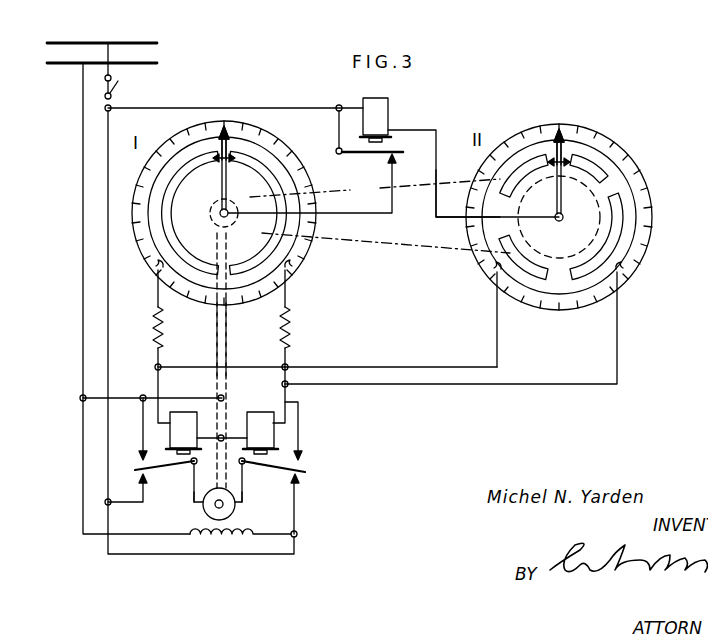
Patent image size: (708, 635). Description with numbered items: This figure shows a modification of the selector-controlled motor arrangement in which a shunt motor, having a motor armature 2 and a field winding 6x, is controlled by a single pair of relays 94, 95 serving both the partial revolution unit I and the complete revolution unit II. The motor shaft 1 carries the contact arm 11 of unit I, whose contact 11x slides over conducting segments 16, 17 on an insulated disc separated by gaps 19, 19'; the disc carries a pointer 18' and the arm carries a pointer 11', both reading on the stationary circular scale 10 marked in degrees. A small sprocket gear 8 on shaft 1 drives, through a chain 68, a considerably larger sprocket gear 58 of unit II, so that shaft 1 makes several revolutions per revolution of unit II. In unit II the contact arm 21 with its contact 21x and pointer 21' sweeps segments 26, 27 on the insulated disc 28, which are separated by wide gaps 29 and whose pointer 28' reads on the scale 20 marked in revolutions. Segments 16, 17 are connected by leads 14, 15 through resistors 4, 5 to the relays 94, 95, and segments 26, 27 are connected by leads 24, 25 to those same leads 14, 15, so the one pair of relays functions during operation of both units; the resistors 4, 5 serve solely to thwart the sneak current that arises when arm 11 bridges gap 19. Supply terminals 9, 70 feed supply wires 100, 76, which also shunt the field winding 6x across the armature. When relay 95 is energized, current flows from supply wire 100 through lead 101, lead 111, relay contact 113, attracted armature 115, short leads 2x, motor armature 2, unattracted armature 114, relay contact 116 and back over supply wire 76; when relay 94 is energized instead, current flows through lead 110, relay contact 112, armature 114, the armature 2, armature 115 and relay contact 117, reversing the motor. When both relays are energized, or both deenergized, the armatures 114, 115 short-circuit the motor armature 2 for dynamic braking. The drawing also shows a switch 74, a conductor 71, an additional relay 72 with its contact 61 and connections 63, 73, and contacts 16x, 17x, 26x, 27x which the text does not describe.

The supply terminal 9 is at (80, 63).
The supply terminal 70 is at (116, 38).
The switch 74 is at (118, 85).
The conductor 71 is at (192, 111).
The supply wire 76 is at (108, 282).
The supply wire 100 is at (83, 284).
The relay contact 61 is at (339, 130).
The relay 72 is at (388, 121).
The conductor 63 is at (353, 214).
The chain 68 is at (400, 242).
The conductor 73 is at (436, 212).
The stationary circular scale 10 is at (268, 136).
The conducting segment 16 is at (167, 218).
The conducting segment 17 is at (273, 239).
The gap 19 is at (189, 128).
The sprocket gear 8 is at (210, 225).
The contact arm 11 is at (239, 168).
The pointer 18' is at (238, 114).
The pointer 11' is at (257, 124).
The contact 11x is at (221, 162).
The gap 19' is at (237, 360).
The motor shaft 1 is at (229, 341).
The contact 16x is at (160, 271).
The contact 17x is at (285, 270).
The lead 14 is at (158, 296).
The resistor 4 is at (154, 320).
The lead 15 is at (287, 298).
The resistor 5 is at (289, 322).
The stationary circular scale 20 is at (620, 148).
The insulated disc 28 is at (580, 217).
The sprocket gear 58 is at (603, 188).
The conducting segment 26 is at (513, 249).
The conducting segment 27 is at (601, 247).
The gap 29 is at (553, 150).
The contact arm 21 is at (574, 177).
The pointer 28' is at (576, 115).
The pointer 21' is at (593, 131).
The contact 21x is at (560, 168).
The contact 26x is at (496, 273).
The contact 27x is at (621, 273).
The lead 24 is at (496, 340).
The lead 25 is at (615, 361).
The lead 101 is at (236, 393).
The relay 94 is at (175, 412).
The relay 95 is at (259, 412).
The lead 110 is at (143, 420).
The lead 111 is at (299, 420).
The relay contact 112 is at (140, 455).
The relay contact 113 is at (301, 456).
The armature 114 is at (165, 466).
The armature 115 is at (262, 467).
The relay contact 116 is at (140, 477).
The relay contact 117 is at (298, 480).
The motor armature 2 is at (203, 508).
The short leads 2x is at (253, 500).
The field winding 6x is at (228, 540).